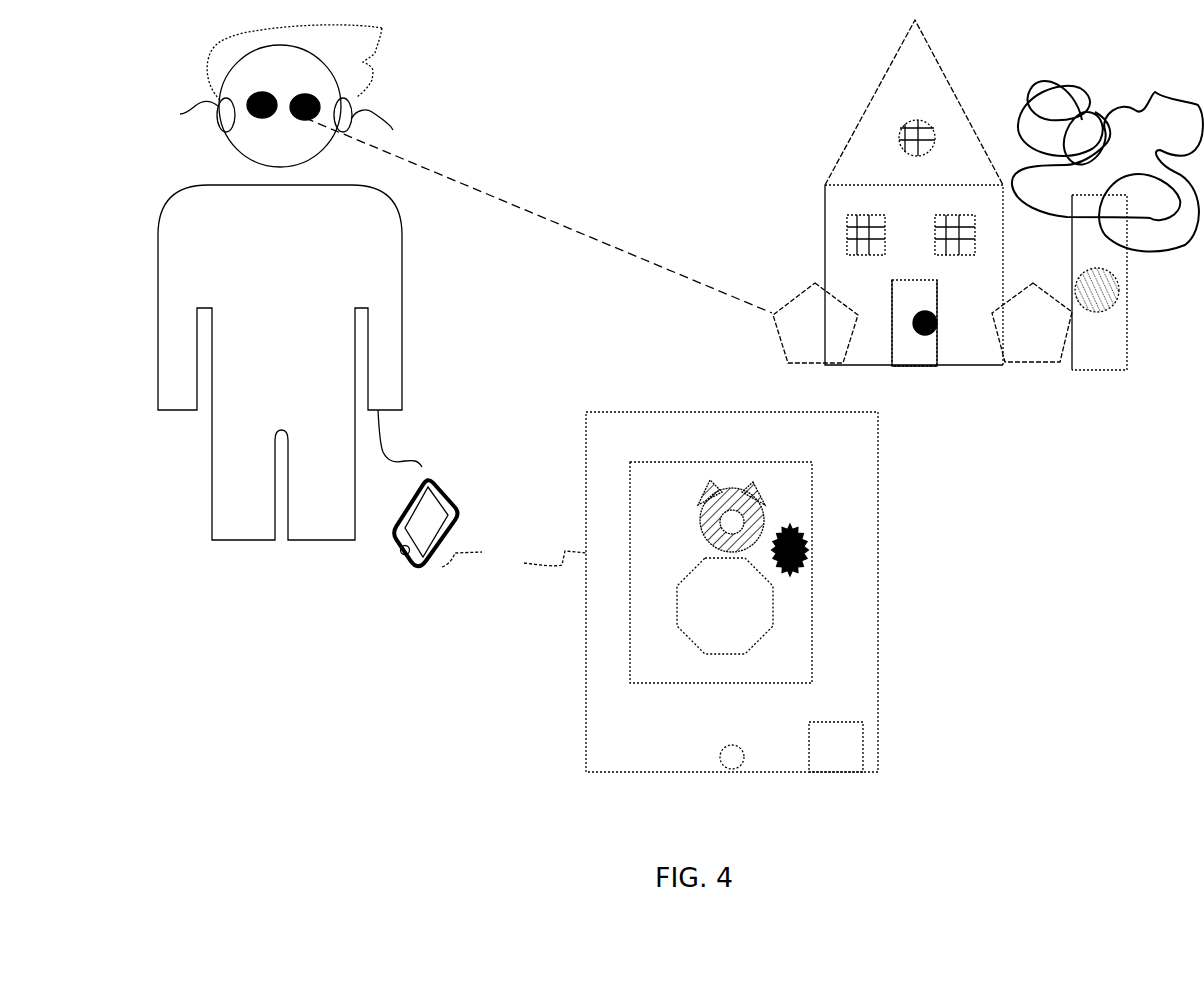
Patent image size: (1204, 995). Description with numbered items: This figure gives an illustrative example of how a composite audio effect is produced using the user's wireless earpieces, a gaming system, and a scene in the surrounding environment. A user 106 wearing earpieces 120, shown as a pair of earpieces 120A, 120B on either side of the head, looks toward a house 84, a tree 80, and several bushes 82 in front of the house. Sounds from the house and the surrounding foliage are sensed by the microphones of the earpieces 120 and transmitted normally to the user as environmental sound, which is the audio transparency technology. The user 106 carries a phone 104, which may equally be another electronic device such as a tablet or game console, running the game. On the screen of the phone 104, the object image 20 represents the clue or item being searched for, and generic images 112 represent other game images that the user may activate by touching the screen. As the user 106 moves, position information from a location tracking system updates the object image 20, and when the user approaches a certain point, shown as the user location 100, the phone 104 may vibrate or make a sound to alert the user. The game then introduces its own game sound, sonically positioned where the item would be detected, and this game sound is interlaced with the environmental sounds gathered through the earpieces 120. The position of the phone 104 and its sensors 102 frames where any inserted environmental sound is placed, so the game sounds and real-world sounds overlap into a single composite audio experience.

The object image 20 is at (765, 518).
The tree 80 is at (1085, 340).
The bushes 82 is at (803, 336).
The house 84 is at (898, 225).
The user location 100 is at (805, 547).
The sensors 102 is at (836, 747).
The phone 104 is at (749, 738).
The user 106 is at (263, 296).
The generic images 112 is at (711, 635).
The earpieces 120 is at (316, 54).
The earpiece 120A is at (183, 115).
The earpiece 120B is at (387, 120).